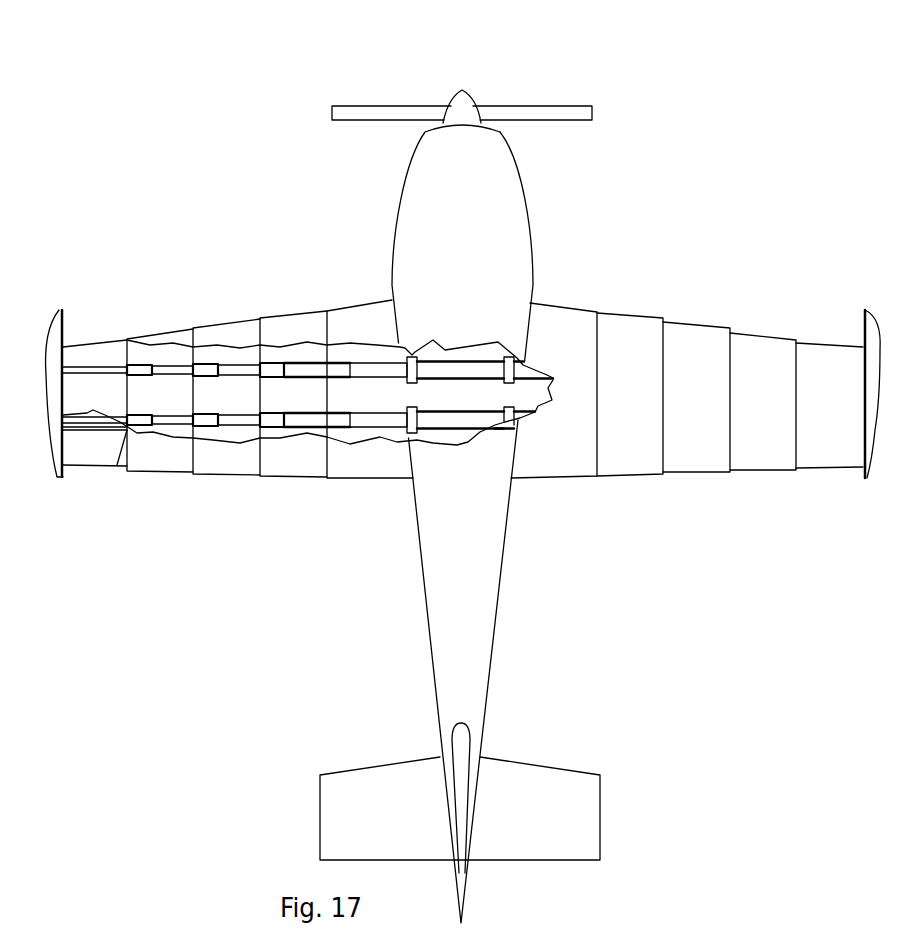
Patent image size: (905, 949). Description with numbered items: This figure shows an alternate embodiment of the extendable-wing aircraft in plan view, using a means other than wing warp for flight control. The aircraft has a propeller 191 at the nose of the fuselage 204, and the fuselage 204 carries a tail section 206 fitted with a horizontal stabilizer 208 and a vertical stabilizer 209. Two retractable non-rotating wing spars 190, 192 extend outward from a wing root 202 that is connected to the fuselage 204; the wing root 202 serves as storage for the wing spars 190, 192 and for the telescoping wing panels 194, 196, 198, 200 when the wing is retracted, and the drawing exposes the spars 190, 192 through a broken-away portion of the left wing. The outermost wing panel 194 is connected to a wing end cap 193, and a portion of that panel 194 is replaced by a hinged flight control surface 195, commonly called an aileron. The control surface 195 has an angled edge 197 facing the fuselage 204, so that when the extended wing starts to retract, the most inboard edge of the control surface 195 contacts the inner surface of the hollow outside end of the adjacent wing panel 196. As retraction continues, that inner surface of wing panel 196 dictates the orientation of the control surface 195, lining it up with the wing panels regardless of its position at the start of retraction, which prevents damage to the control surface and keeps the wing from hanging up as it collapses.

The retractable wing spar 190 is at (255, 378).
The propeller 191 is at (542, 100).
The retractable wing spar 192 is at (295, 410).
The wing end cap 193 is at (47, 367).
The wing panel 194 is at (110, 337).
The hinged flight control surface 195 is at (100, 467).
The wing panel 196 is at (178, 328).
The angled edge 197 is at (118, 466).
The wing panel 198 is at (243, 315).
The wing panel 200 is at (298, 310).
The wing root 202 is at (370, 300).
The fuselage 204 is at (538, 237).
The tail section 206 is at (492, 677).
The horizontal stabilizer 208 is at (350, 768).
The vertical stabilizer 209 is at (465, 873).